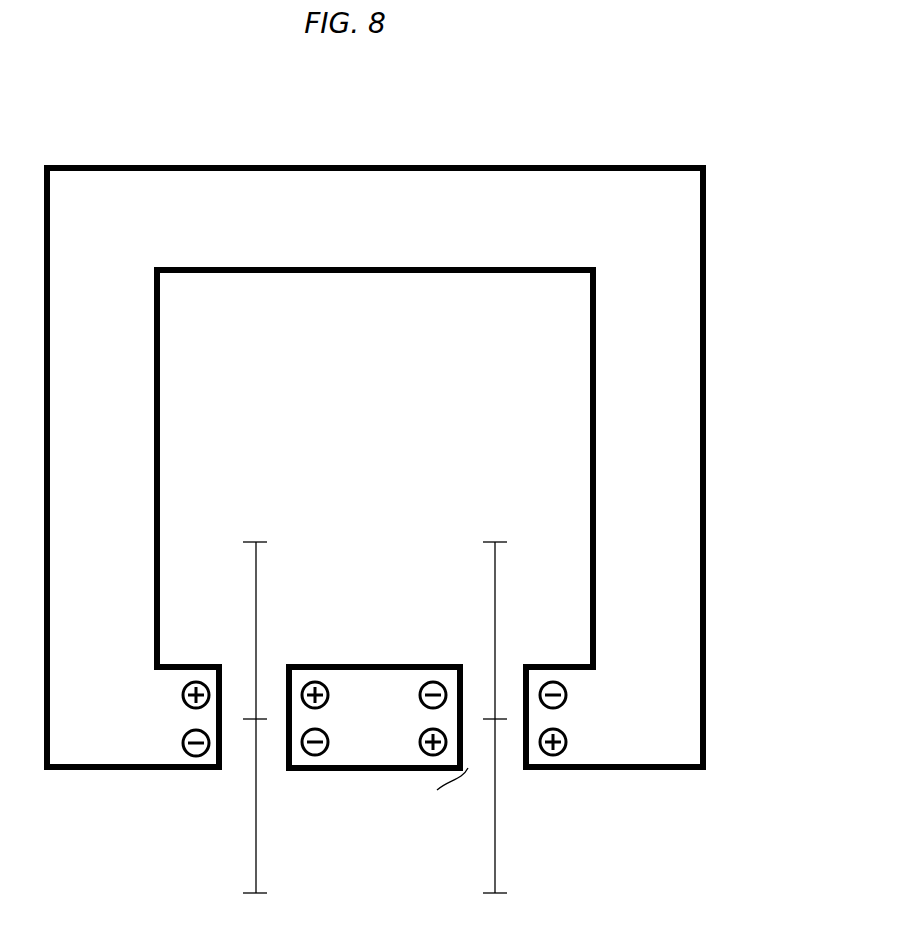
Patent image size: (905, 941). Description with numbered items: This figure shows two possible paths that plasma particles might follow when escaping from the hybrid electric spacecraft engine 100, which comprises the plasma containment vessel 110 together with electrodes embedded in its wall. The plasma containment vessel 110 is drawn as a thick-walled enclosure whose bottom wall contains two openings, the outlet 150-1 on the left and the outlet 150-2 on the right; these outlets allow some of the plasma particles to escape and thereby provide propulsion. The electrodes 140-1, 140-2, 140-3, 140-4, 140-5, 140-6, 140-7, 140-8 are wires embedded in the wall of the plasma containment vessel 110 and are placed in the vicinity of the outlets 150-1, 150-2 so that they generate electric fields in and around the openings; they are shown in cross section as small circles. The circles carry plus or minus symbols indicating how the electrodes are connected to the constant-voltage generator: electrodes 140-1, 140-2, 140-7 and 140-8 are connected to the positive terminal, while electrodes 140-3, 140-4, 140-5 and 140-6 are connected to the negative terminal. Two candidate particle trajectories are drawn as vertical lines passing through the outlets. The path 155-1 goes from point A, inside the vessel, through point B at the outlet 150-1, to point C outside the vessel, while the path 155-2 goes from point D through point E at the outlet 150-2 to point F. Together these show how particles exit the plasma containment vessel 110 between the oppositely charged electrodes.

The hybrid electric spacecraft engine 100 is at (542, 77).
The plasma containment vessel 110 is at (688, 760).
The outlet 150-1 is at (228, 769).
The outlet 150-2 is at (517, 769).
The path 155-1 is at (256, 596).
The path 155-2 is at (495, 596).
The electrode 140-1 is at (183, 695).
The electrode 140-2 is at (328, 700).
The electrode 140-3 is at (420, 695).
The electrode 140-4 is at (567, 695).
The electrode 140-5 is at (183, 744).
The electrode 140-6 is at (322, 752).
The electrode 140-7 is at (422, 753).
The electrode 140-8 is at (567, 742).